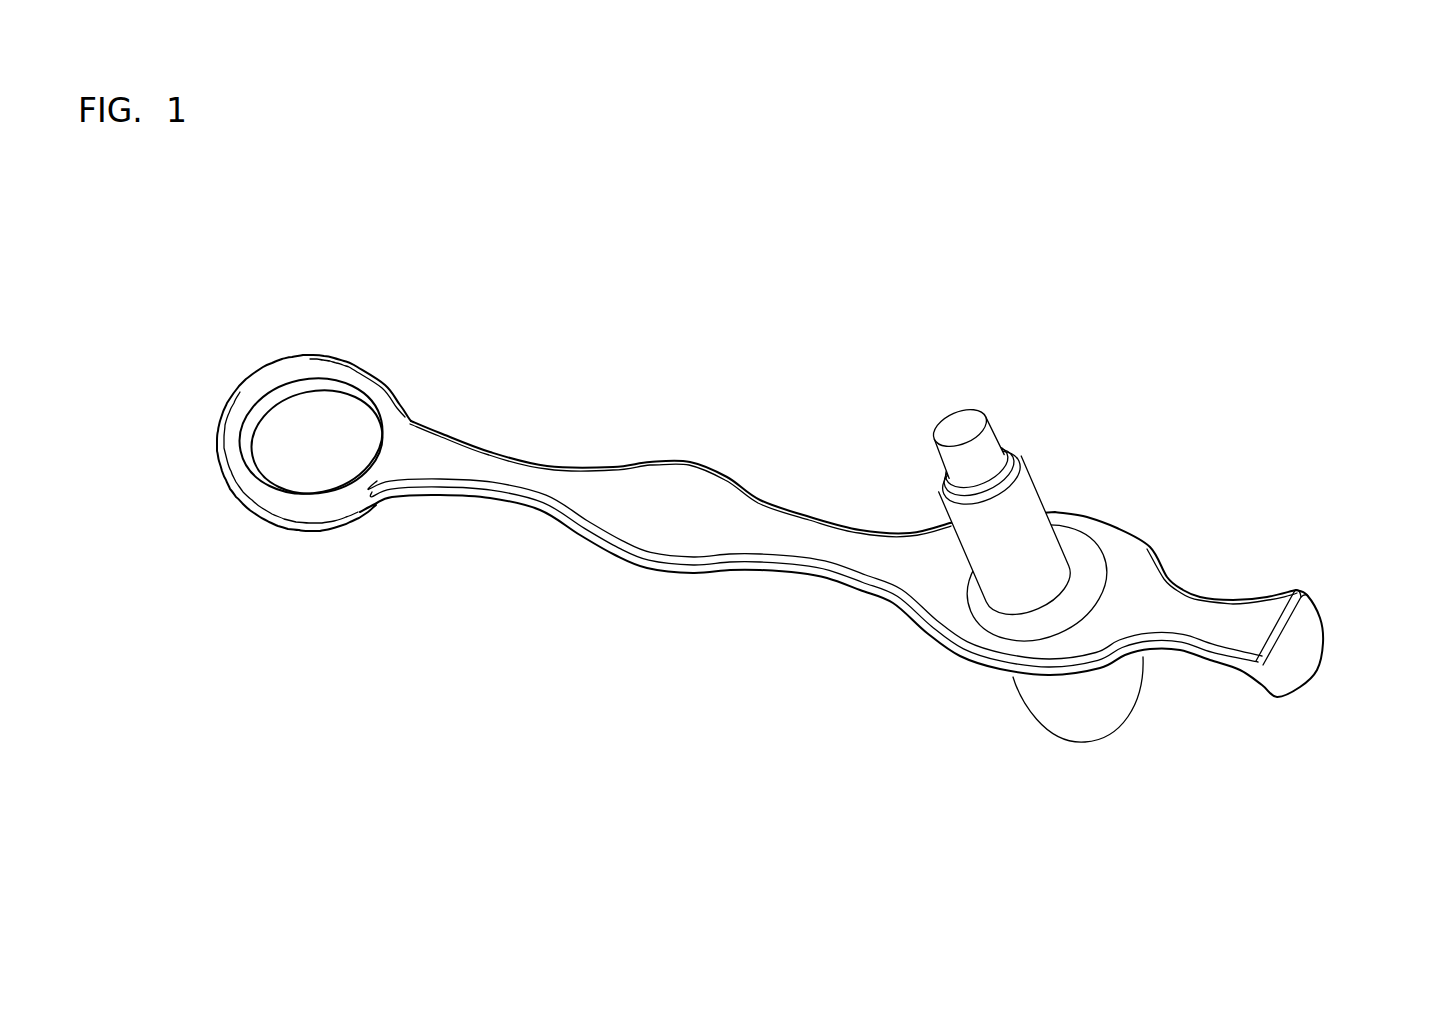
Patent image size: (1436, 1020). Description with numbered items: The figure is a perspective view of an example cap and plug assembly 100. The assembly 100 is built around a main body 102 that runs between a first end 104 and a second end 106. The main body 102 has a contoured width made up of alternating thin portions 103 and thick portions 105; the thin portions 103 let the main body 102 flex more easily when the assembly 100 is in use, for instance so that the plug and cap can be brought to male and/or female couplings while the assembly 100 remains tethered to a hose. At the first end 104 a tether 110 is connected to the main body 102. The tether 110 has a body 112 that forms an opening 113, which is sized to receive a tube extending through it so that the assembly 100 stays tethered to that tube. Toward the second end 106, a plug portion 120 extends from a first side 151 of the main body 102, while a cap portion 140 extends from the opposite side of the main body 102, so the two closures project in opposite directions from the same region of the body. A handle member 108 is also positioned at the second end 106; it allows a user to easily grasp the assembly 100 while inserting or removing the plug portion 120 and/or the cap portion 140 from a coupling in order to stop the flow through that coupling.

The cap and plug assembly 100 is at (1145, 273).
The main body 102 is at (682, 477).
The thin portions 103 is at (492, 478).
The first end 104 is at (405, 443).
The thick portions 105 is at (662, 543).
The second end 106 is at (1228, 612).
The handle member 108 is at (1310, 657).
The tether 110 is at (252, 492).
The body 112 is at (310, 390).
The opening 113 is at (283, 427).
The plug portion 120 is at (1054, 437).
The cap portion 140 is at (993, 726).
The first side 151 is at (615, 476).